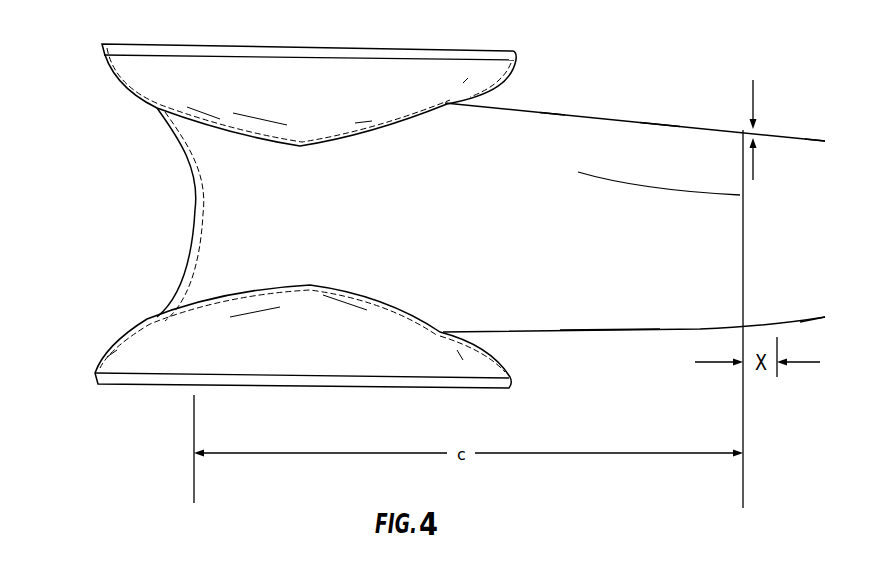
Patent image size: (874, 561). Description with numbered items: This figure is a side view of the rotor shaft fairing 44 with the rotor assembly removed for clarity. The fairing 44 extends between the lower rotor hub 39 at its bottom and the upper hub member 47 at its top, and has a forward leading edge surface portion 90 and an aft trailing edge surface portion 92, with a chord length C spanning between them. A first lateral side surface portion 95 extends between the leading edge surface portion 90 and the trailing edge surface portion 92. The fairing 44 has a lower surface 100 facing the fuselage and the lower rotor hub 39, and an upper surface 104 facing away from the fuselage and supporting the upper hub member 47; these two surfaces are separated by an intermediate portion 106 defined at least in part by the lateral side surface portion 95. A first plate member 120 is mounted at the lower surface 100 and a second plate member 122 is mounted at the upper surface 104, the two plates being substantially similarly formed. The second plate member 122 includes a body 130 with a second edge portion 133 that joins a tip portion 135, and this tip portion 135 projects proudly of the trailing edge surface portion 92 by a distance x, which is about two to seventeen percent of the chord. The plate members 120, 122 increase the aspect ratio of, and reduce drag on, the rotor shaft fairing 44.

The rotor shaft fairing 44 is at (435, 271).
The upper hub member 47 is at (145, 74).
The lower rotor hub 39 is at (131, 355).
The leading edge surface portion 90 is at (195, 210).
The upper surface 104 is at (604, 113).
The lower surface 100 is at (552, 332).
The body 130 is at (553, 98).
The second edge portion 133 is at (657, 118).
The tip portion 135 is at (815, 138).
The first plate member 120 is at (824, 306).
The first lateral side surface portion 95 is at (740, 195).
The intermediate portion 106 is at (576, 291).
The second plate member 122 is at (773, 116).
The trailing edge surface portion 92 is at (745, 285).